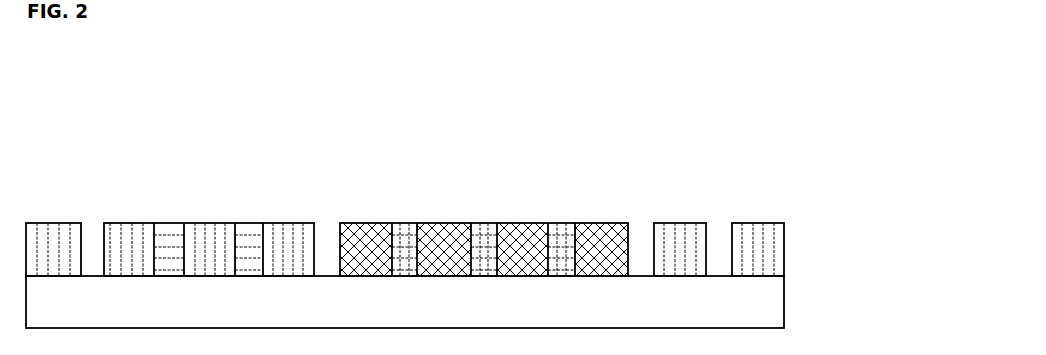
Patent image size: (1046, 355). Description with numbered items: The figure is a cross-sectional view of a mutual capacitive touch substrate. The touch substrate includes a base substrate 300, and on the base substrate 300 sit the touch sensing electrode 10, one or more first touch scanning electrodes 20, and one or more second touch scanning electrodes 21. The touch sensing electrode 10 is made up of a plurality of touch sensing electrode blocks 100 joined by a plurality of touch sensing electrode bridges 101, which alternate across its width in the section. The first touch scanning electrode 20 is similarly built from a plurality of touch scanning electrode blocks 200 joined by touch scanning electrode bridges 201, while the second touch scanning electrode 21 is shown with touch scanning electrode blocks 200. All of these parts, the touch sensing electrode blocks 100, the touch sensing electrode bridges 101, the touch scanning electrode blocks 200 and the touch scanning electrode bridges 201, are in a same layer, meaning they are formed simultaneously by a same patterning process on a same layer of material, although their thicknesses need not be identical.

The touch sensing electrode 10 is at (625, 131).
The first touch scanning electrode 20 is at (318, 131).
The second touch scanning electrode 21 is at (788, 131).
The touch sensing electrode block 100 is at (366, 223).
The touch sensing electrode bridge 101 is at (483, 223).
The touch scanning electrode block 200 is at (682, 223).
The touch scanning electrode bridge 201 is at (248, 223).
The base substrate 300 is at (784, 299).